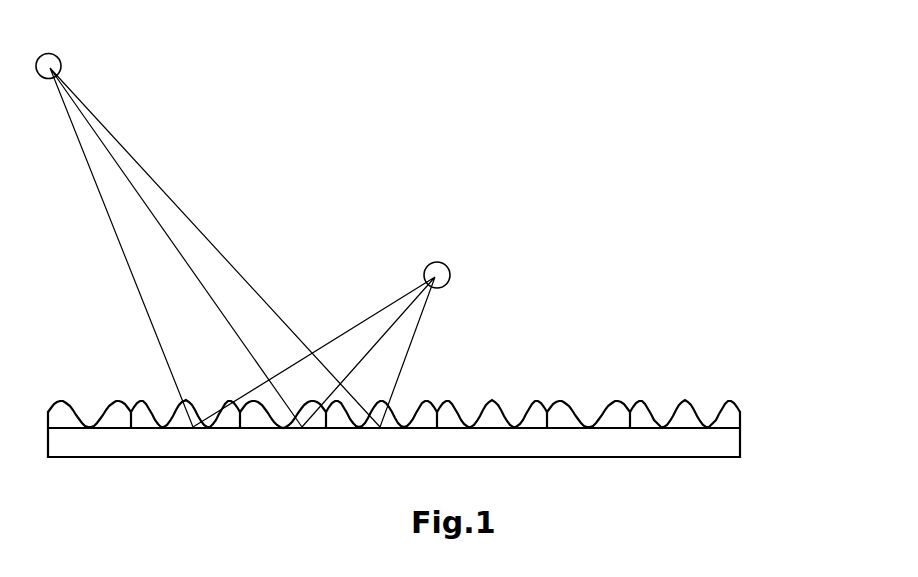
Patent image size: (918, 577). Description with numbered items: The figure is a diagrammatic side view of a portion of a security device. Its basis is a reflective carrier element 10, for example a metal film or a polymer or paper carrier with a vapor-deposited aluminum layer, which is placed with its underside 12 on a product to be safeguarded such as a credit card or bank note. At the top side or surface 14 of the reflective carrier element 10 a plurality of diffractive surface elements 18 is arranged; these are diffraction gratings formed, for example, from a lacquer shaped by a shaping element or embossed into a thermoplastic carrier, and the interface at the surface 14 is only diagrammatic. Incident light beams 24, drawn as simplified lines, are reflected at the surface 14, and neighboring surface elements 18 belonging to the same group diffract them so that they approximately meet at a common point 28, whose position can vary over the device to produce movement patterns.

The reflective carrier element 10 is at (89, 445).
The underside 12 is at (629, 475).
The surface 14 is at (733, 413).
The diffractive surface elements 18 is at (83, 374).
The incident light beams 24 is at (122, 246).
The common point 28 is at (440, 268).